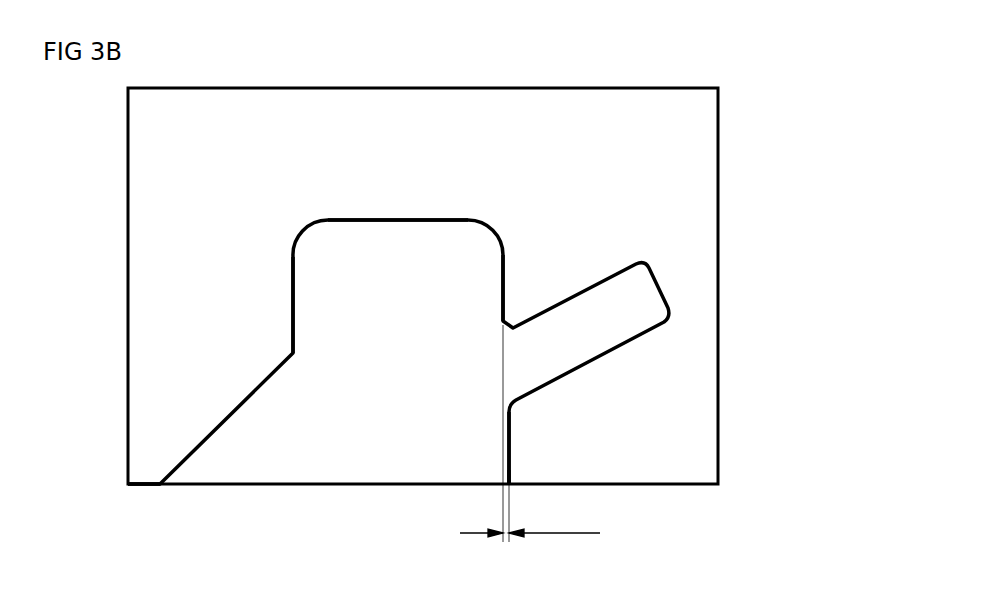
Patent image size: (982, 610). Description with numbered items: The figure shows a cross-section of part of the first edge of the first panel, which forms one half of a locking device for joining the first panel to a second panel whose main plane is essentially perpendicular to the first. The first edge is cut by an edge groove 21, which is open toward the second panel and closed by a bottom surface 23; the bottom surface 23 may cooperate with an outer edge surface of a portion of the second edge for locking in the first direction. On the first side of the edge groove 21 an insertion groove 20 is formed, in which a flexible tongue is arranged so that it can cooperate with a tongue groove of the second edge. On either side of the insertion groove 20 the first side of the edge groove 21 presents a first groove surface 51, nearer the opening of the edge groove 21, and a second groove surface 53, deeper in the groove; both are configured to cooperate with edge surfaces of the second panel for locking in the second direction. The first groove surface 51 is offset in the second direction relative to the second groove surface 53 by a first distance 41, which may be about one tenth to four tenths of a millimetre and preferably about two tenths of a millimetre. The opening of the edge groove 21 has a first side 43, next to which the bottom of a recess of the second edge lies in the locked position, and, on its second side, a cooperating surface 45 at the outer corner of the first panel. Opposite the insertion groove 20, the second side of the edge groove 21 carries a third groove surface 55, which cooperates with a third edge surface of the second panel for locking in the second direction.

The insertion groove 20 is at (652, 313).
The edge groove 21 is at (385, 258).
The bottom surface 23 is at (352, 220).
The first distance 41 is at (530, 433).
The first side of an opening of the edge groove 43 is at (511, 483).
The cooperating surface 45 is at (140, 487).
The first groove surface 51 is at (508, 445).
The second groove surface 53 is at (504, 276).
The third groove surface 55 is at (292, 290).